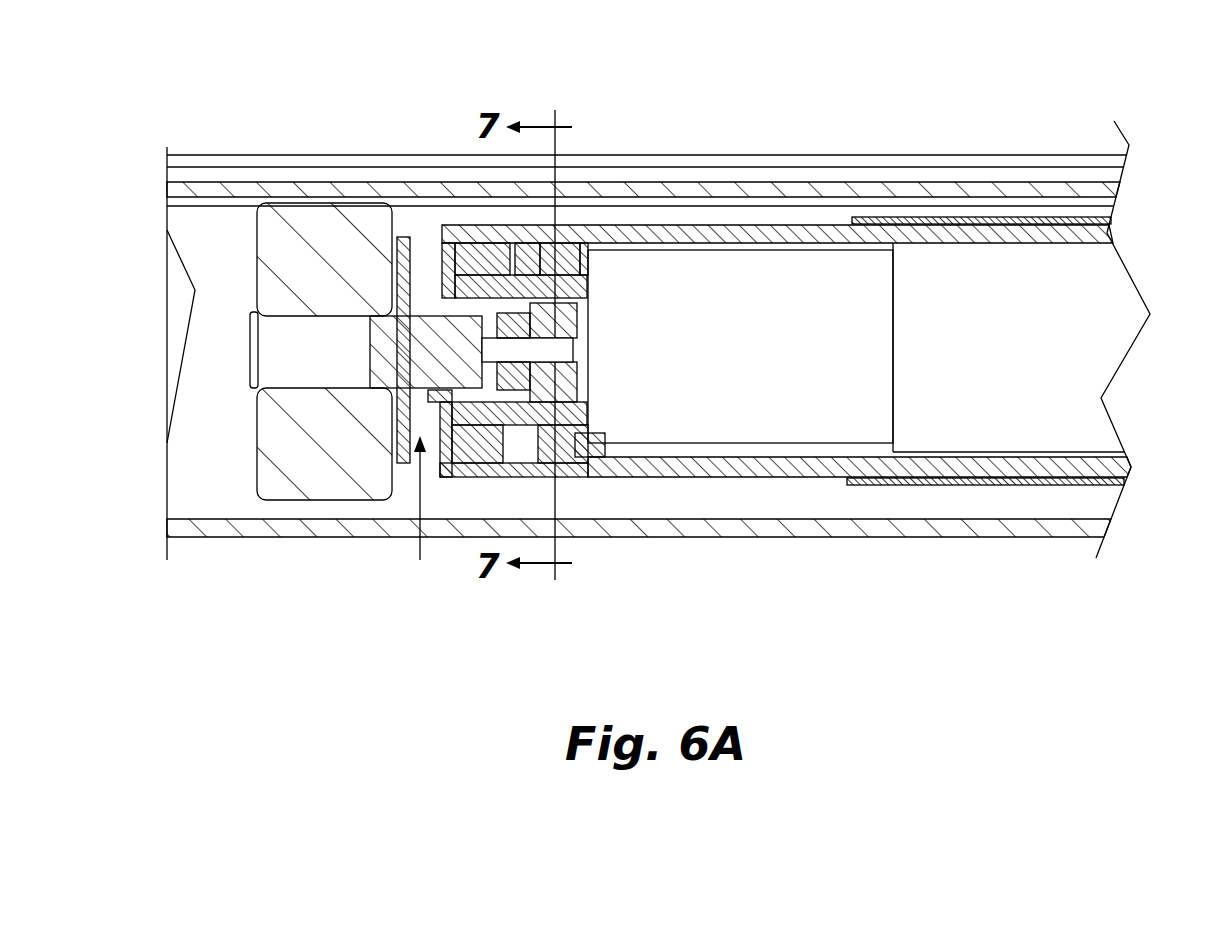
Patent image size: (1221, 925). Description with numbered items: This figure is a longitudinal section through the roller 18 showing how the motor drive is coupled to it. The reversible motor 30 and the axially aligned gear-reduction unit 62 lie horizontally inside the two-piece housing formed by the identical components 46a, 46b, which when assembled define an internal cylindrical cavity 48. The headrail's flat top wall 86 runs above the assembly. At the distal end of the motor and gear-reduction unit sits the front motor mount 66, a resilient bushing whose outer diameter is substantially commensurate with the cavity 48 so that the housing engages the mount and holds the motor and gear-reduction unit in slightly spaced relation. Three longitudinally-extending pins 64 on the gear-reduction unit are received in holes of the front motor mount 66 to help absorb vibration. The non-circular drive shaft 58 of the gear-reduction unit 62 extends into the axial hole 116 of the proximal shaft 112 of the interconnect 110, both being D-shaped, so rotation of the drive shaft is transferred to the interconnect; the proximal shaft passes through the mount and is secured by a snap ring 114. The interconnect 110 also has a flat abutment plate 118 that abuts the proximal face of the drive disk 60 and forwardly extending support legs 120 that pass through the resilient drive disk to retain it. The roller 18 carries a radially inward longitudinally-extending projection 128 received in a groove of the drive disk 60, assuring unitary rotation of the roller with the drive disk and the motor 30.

The roller 18 is at (1048, 195).
The reversible motor 30 is at (1088, 305).
The housing component 46a is at (806, 222).
The housing component 46b is at (905, 475).
The internal cylindrical cavity 48 is at (735, 455).
The drive shaft 58 is at (523, 352).
The drive disk 60 is at (327, 223).
The gear-reduction unit 62 is at (878, 305).
The longitudinally-extending pins 64 is at (583, 230).
The front motor mount 66 is at (470, 455).
The top wall 86 is at (725, 155).
The interconnect 110 is at (399, 517).
The proximal shaft 112 is at (397, 353).
The snap ring 114 is at (537, 390).
The axial hole 116 is at (527, 350).
The flat abutment plate 118 is at (425, 247).
The support legs 120 is at (277, 368).
The longitudinally-extending projection 128 is at (200, 206).